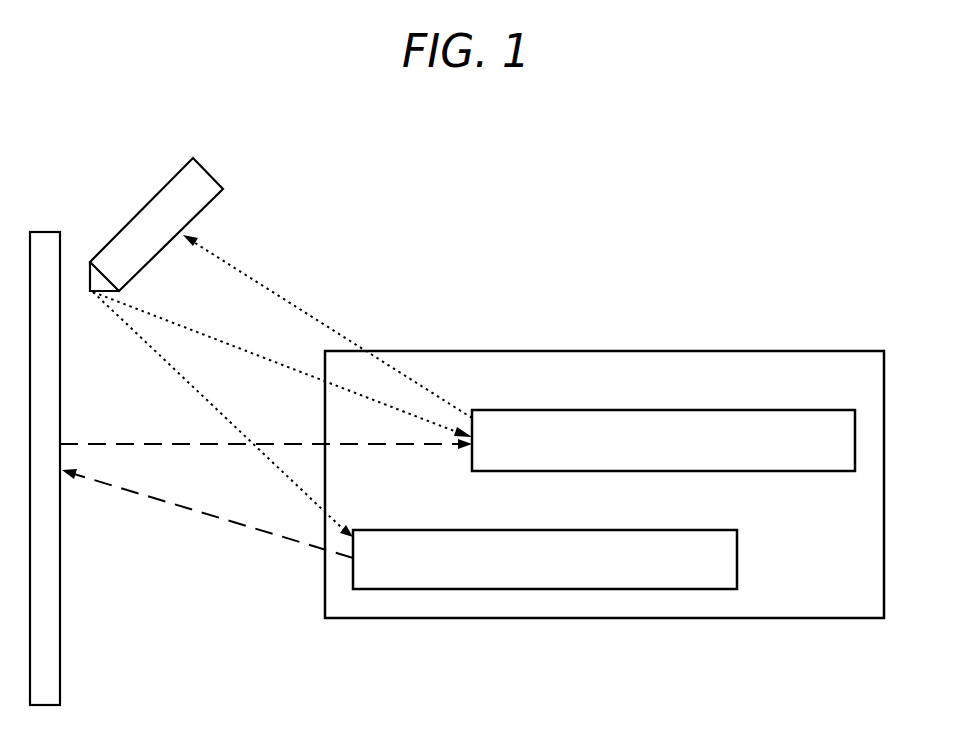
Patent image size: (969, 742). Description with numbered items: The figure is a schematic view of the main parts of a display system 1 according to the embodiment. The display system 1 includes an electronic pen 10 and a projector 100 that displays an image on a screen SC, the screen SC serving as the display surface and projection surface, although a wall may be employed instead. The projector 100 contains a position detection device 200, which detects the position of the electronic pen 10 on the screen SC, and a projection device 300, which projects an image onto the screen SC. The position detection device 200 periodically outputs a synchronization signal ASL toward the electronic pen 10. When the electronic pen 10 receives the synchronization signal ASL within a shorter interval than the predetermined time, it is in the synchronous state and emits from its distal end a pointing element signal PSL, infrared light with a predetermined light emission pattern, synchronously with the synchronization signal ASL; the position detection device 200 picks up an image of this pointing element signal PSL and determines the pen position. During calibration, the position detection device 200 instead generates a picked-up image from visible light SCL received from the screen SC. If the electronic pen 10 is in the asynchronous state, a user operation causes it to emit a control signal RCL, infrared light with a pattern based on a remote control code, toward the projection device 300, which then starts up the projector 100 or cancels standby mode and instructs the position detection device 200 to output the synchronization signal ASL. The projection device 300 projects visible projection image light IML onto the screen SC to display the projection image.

The display system 1 is at (866, 168).
The electronic pen 10 is at (160, 191).
The projector 100 is at (728, 351).
The position detection device 200 is at (797, 409).
The projection device 300 is at (678, 529).
The screen SC is at (45, 232).
The synchronization signal ASL is at (327, 326).
The pointing element signal PSL is at (282, 364).
The control signal RCL is at (223, 414).
The visible light SCL is at (266, 433).
The projection image light IML is at (207, 513).